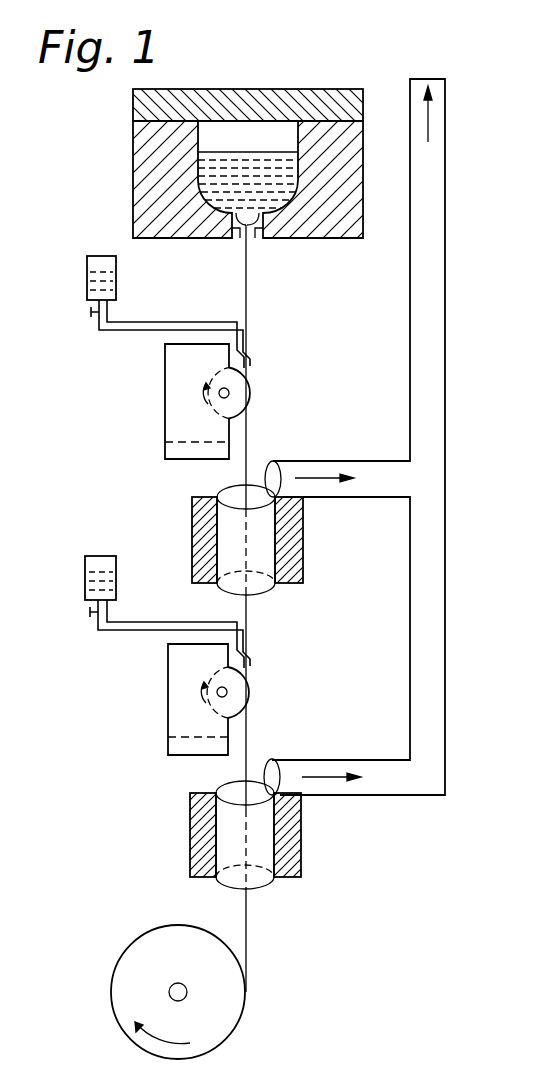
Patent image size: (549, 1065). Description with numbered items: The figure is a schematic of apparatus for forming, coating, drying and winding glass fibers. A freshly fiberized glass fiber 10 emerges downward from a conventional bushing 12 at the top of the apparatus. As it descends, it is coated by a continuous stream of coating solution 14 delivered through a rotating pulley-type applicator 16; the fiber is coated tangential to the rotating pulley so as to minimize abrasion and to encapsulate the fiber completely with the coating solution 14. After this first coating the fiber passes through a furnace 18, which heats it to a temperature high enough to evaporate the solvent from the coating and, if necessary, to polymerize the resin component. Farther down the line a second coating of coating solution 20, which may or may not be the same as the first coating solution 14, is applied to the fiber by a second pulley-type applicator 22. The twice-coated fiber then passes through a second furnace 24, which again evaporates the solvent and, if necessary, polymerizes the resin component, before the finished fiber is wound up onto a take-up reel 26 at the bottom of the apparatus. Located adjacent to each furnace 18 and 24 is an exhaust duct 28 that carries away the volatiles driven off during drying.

The glass fiber 10 is at (247, 291).
The bushing 12 is at (337, 232).
The coating solution 14 is at (116, 292).
The pulley-type applicator 16 is at (242, 391).
The furnace 18 is at (270, 542).
The coating solution 20 is at (116, 590).
The pulley-type applicator 22 is at (240, 690).
The second furnace 24 is at (265, 842).
The take-up reel 26 is at (228, 1014).
The exhaust duct 28 is at (322, 461).